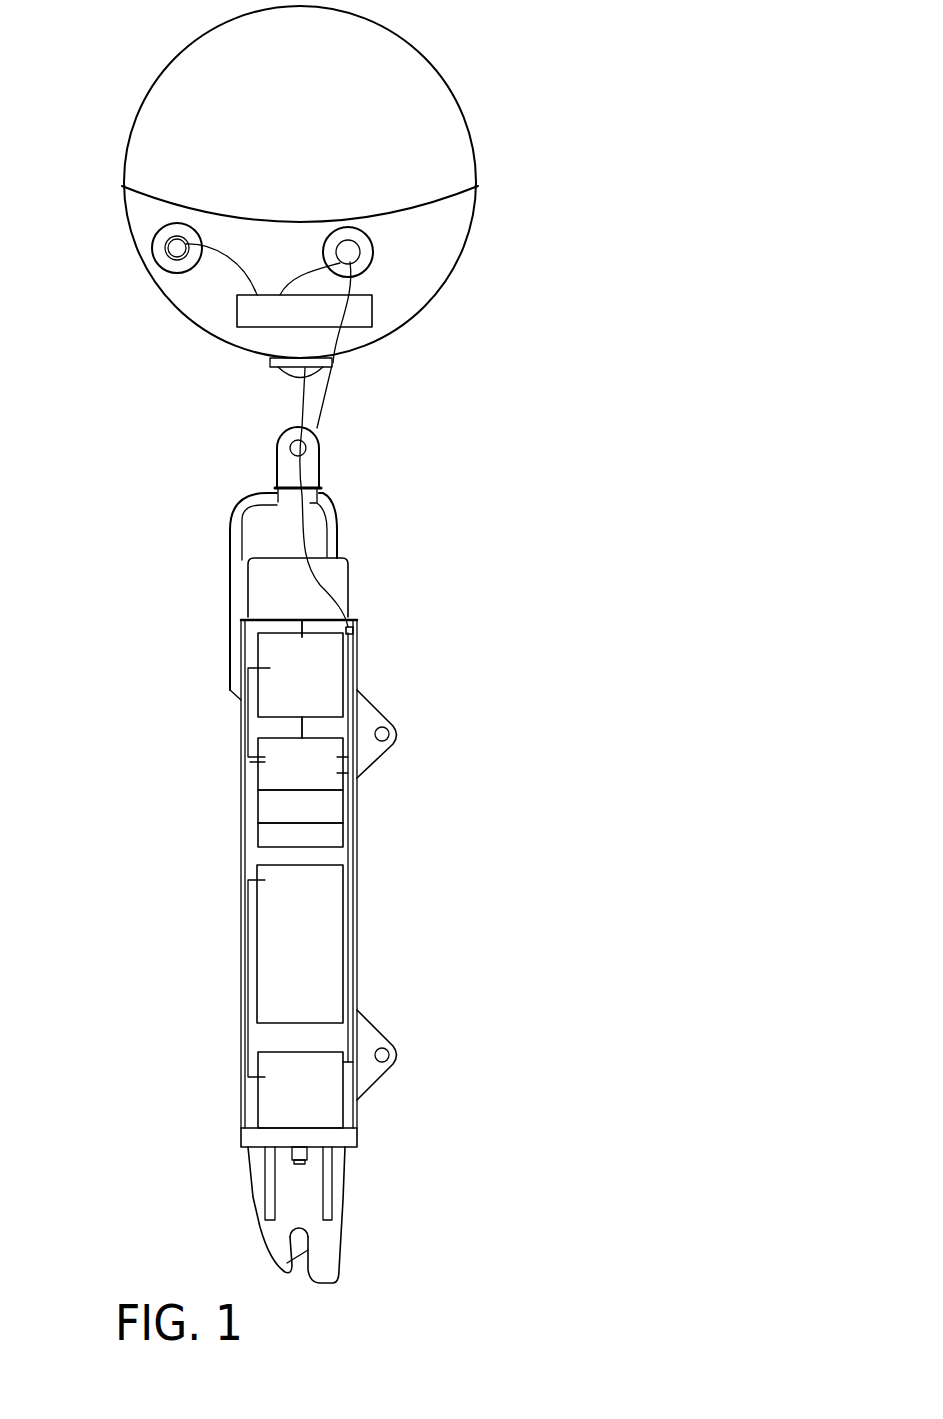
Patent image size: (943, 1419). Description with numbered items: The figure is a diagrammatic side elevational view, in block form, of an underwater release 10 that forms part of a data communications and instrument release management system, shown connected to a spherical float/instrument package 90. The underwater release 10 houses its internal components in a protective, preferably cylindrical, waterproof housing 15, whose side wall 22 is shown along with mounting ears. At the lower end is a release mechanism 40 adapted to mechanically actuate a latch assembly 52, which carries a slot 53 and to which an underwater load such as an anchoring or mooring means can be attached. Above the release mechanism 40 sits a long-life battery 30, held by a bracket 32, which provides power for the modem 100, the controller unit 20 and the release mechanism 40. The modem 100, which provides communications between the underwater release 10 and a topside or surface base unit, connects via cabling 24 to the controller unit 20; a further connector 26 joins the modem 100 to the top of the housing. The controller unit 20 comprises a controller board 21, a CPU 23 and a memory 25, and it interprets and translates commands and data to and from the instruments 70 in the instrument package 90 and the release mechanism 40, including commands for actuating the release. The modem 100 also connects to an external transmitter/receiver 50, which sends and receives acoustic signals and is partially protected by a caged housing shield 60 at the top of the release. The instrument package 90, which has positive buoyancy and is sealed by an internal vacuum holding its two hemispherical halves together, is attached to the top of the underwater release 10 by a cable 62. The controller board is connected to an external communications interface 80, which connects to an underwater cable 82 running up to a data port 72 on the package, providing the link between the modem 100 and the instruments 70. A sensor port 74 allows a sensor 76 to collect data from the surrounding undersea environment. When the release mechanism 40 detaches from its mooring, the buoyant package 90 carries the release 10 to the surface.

The underwater release 10 is at (434, 852).
The waterproof housing 15 is at (422, 883).
The controller unit 20 is at (190, 804).
The controller board 21 is at (263, 747).
The housing side wall 22 is at (352, 898).
The CPU 23 is at (265, 812).
The cabling 24 is at (300, 728).
The memory 25 is at (262, 835).
The connector 26 is at (300, 627).
The long-life battery 30 is at (330, 983).
The battery bracket 32 is at (248, 937).
The release mechanism 40 is at (330, 1110).
The transmitter/receiver 50 is at (340, 567).
The latch assembly 52 is at (322, 1230).
The slot 53 is at (297, 1267).
The caged housing shield 60 is at (330, 507).
The cable 62 is at (308, 403).
The instruments 70 is at (373, 308).
The data port 72 is at (370, 236).
The sensor port 74 is at (152, 250).
The sensor 76 is at (160, 273).
The external communications interface 80 is at (357, 627).
The underwater cable 82 is at (332, 378).
The spherical instrument package 90 is at (490, 119).
The modem 100 is at (317, 678).